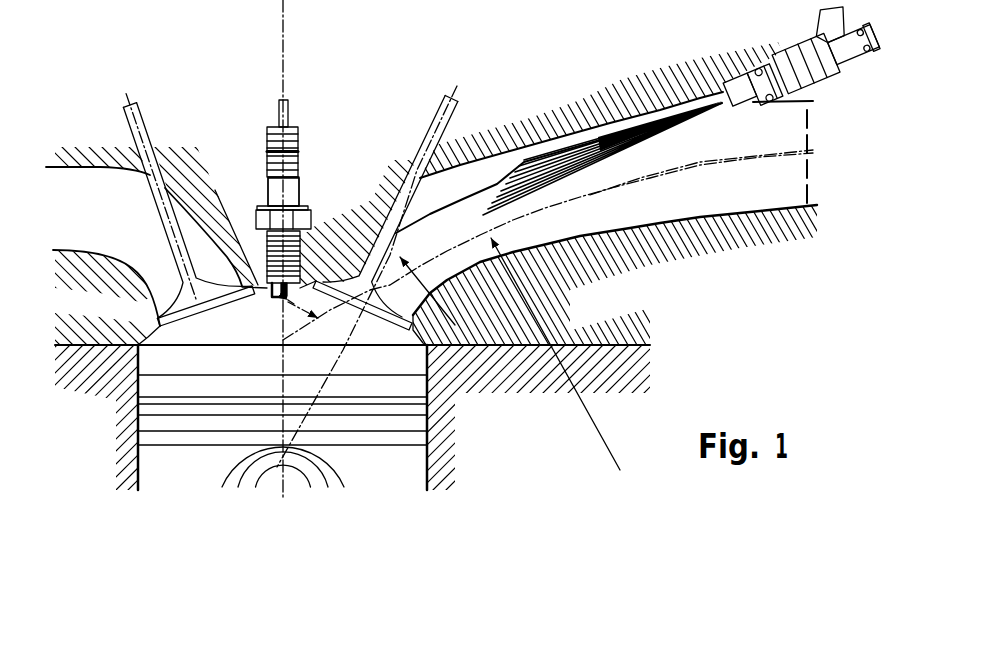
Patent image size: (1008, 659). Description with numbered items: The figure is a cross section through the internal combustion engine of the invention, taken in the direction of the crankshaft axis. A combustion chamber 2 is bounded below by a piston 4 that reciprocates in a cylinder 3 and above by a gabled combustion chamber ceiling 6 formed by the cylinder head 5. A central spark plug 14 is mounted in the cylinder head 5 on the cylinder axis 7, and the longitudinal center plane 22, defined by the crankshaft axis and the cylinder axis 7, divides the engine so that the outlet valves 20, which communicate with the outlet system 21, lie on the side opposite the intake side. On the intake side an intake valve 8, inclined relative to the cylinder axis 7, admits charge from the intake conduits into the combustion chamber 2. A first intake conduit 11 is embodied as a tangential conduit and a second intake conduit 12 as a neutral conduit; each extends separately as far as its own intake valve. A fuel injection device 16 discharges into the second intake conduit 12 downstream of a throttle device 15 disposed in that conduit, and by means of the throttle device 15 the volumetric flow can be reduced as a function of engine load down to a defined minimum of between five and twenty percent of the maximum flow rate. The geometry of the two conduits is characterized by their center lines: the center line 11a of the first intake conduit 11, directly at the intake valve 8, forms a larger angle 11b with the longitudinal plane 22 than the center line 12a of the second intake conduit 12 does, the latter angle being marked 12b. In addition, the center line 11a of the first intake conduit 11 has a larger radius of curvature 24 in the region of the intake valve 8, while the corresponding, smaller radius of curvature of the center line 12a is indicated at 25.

The combustion chamber 2 is at (246, 370).
The cylinder 3 is at (429, 371).
The piston 4 is at (407, 428).
The cylinder head 5 is at (229, 172).
The gabled combustion chamber ceiling 6 is at (279, 306).
The cylinder axis 7 is at (283, 80).
The intake valve 8 is at (443, 135).
The first intake conduit 11 is at (620, 237).
The center line of the first intake conduit 11a is at (617, 184).
The angle between center line 11a and longitudinal plane 11b is at (522, 168).
The second intake conduit 12 is at (523, 143).
The center line of the second intake conduit 12a is at (640, 168).
The angle between center line 12a and longitudinal plane 12b is at (290, 367).
The central spark plug 14 is at (300, 187).
The throttle device 15 is at (810, 188).
The fuel injection device 16 is at (830, 88).
The outlet valves 20 is at (197, 298).
The outlet system 21 is at (108, 232).
The longitudinal center plane 22 is at (283, 21).
The radius of curvature of center line 11a 24 is at (547, 337).
The radius of curvature of center line 12a 25 is at (429, 302).